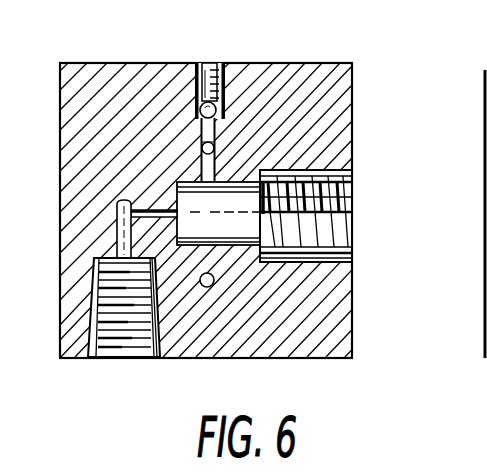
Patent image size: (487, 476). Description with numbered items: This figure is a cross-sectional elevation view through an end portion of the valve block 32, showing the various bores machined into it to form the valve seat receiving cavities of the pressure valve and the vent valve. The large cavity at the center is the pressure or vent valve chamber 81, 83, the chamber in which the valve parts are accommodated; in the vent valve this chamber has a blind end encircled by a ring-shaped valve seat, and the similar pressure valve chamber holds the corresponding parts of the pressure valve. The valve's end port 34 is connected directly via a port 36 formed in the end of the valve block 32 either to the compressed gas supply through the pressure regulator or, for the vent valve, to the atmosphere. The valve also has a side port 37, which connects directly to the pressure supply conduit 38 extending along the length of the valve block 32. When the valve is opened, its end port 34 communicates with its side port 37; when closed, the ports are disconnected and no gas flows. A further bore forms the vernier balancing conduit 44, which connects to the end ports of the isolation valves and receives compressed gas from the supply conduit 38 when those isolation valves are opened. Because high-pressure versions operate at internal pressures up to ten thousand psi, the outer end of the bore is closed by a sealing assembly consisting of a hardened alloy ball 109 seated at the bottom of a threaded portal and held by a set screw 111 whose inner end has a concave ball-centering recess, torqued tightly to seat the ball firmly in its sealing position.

The valve block 32 is at (50, 203).
The end port 34 is at (185, 213).
The pressure port 36 is at (126, 350).
The side port 37 is at (210, 193).
The pressure supply conduit 38 is at (225, 134).
The vernier balancing conduit 44 is at (213, 285).
The vent valve chamber 81 is at (369, 159).
The pressure valve chamber 83 is at (306, 216).
The hardened alloy ball 109 is at (220, 68).
The set screw 111 is at (207, 63).